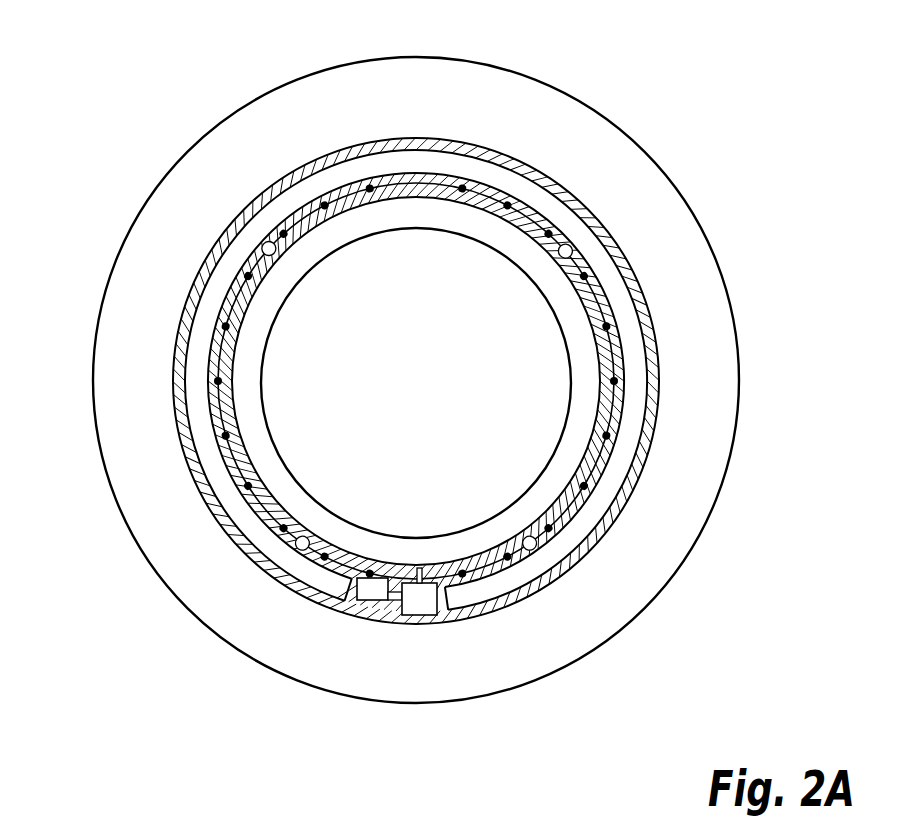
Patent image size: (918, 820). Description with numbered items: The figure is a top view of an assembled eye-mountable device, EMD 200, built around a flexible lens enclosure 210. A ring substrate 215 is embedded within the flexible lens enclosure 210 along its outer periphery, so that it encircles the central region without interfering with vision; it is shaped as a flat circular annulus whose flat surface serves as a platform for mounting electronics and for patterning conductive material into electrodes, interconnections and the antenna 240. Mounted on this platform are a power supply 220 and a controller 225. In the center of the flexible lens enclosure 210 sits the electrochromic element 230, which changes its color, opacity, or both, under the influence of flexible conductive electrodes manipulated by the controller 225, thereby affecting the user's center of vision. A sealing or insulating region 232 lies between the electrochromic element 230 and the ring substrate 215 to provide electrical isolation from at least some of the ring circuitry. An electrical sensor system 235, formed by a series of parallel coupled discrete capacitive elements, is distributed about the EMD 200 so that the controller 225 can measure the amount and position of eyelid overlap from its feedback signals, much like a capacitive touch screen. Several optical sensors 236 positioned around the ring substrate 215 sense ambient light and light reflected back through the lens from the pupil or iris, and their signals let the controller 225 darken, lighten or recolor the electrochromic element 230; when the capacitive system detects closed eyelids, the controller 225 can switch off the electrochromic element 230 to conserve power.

The eye-mountable device (EMD) 200 is at (427, 377).
The flexible lens enclosure 210 is at (92, 428).
The ring substrate 215 is at (602, 533).
The power supply 220 is at (363, 590).
The controller 225 is at (417, 608).
The electrochromic element 230 is at (375, 340).
The sealing or insulating region 232 is at (585, 385).
The electrical sensor system 235 is at (215, 360).
The optical sensors 236 is at (266, 246).
The antenna 240 is at (547, 567).